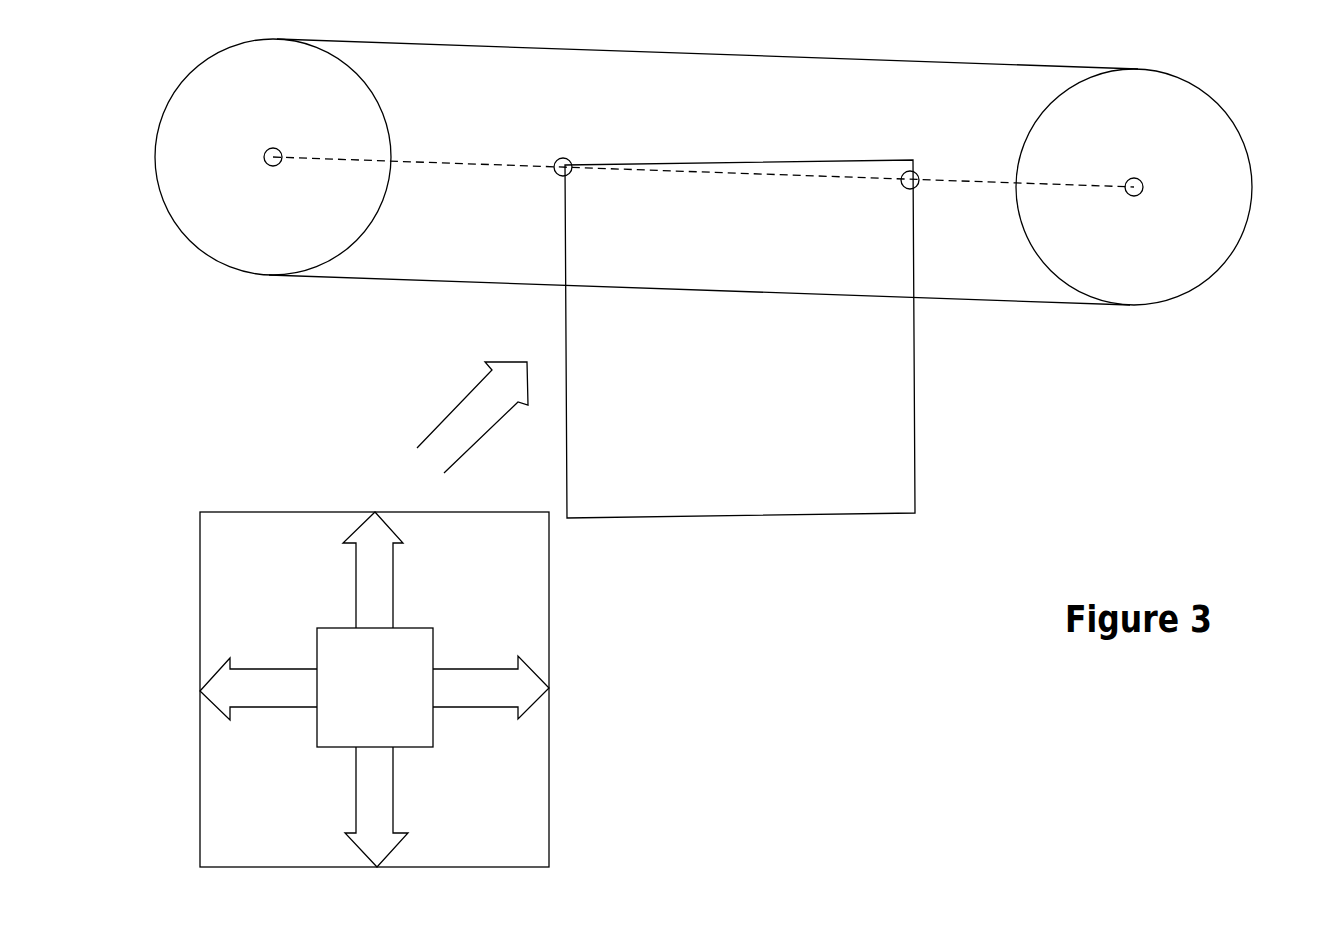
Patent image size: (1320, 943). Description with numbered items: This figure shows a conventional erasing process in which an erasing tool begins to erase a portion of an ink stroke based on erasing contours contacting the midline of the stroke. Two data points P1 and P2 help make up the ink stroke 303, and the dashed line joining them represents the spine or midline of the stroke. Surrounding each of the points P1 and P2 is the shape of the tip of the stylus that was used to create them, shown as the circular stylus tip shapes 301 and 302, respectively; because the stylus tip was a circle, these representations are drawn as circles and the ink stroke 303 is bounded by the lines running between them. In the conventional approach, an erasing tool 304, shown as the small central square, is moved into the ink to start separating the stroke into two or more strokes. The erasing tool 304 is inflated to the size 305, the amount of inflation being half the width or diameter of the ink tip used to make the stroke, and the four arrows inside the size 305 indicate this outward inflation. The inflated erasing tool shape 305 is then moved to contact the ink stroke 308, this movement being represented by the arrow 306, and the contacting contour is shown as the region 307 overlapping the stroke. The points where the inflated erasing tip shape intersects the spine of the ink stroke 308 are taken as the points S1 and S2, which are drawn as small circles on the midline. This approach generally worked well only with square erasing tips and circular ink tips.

The stylus tip shape 301 is at (268, 275).
The stylus tip shape 302 is at (1215, 100).
The ink stroke 303 is at (840, 58).
The erasing tool 304 is at (402, 658).
The inflated erasing tool shape 305 is at (555, 617).
The arrow 306 is at (437, 427).
The sensing window 307 is at (740, 515).
The ink stroke 308 is at (827, 175).
The data point P1 is at (264, 145).
The data point P2 is at (1151, 188).
The intersection point S1 is at (570, 152).
The intersection point S2 is at (924, 167).